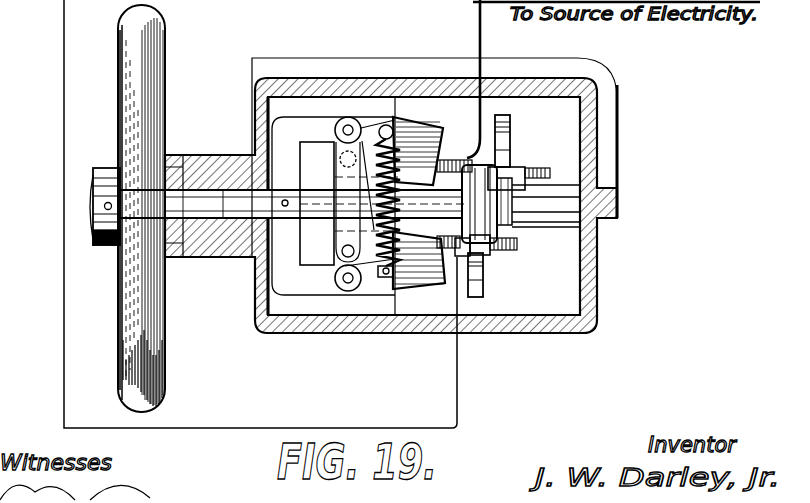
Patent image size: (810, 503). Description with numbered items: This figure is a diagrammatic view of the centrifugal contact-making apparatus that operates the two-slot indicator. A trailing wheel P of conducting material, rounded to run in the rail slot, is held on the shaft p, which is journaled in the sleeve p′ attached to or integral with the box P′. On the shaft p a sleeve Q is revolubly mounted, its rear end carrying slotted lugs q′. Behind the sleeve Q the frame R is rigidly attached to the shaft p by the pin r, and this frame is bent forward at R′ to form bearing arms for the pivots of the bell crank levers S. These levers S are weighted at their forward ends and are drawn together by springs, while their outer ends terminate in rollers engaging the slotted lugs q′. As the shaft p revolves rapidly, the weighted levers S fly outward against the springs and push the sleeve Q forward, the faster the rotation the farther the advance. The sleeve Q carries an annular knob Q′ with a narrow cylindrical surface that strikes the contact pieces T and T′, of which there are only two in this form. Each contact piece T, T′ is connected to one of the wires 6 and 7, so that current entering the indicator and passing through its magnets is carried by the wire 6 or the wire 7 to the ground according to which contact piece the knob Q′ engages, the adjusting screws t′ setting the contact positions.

The wire 6 is at (64, 44).
The wire 7 is at (472, 40).
The trailing wheel P is at (125, 313).
The shaft p is at (218, 257).
The sleeve p′ is at (232, 257).
The frame R is at (288, 262).
The bearing arms R′ is at (308, 128).
The slotted lugs q′ is at (317, 203).
The pin r is at (285, 206).
The bell crank levers S is at (352, 126).
The sleeve Q is at (292, 204).
The annular knob Q′ is at (473, 220).
The contact piece T is at (485, 279).
The contact piece T′ is at (510, 128).
The contact screws t′ is at (517, 248).
The box P′ is at (598, 300).